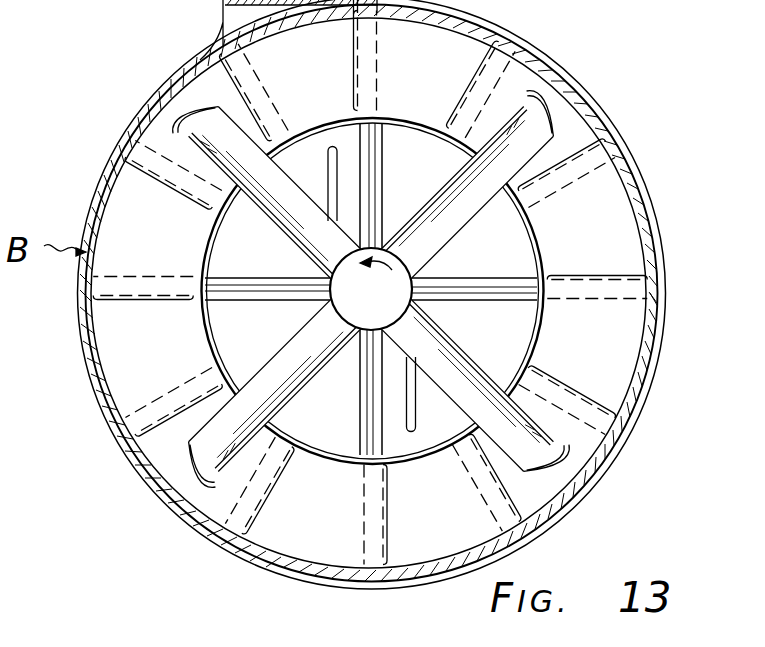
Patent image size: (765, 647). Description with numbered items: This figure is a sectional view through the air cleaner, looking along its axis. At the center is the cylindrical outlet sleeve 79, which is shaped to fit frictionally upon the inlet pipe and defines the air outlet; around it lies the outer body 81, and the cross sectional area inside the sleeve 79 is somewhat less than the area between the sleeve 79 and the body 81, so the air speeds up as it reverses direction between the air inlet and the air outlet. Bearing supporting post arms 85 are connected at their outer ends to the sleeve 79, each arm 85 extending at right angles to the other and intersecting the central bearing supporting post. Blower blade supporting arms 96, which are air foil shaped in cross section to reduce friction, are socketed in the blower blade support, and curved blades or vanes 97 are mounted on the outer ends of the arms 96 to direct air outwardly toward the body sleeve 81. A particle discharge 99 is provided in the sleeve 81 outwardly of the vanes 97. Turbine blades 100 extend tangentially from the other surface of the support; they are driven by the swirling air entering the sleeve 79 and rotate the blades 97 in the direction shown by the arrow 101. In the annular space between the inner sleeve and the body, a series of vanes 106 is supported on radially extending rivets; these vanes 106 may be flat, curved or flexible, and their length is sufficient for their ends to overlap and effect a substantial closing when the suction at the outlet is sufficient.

The outlet sleeve 79 is at (542, 326).
The body 81 is at (106, 181).
The bearing supporting post arms 85 is at (287, 283).
The blower blade supporting arms 96 is at (300, 200).
The blades or vanes 97 is at (197, 115).
The particle discharge 99 is at (233, 17).
The turbine blades 100 is at (334, 182).
The arrow 101 is at (390, 268).
The vanes 106 is at (527, 72).